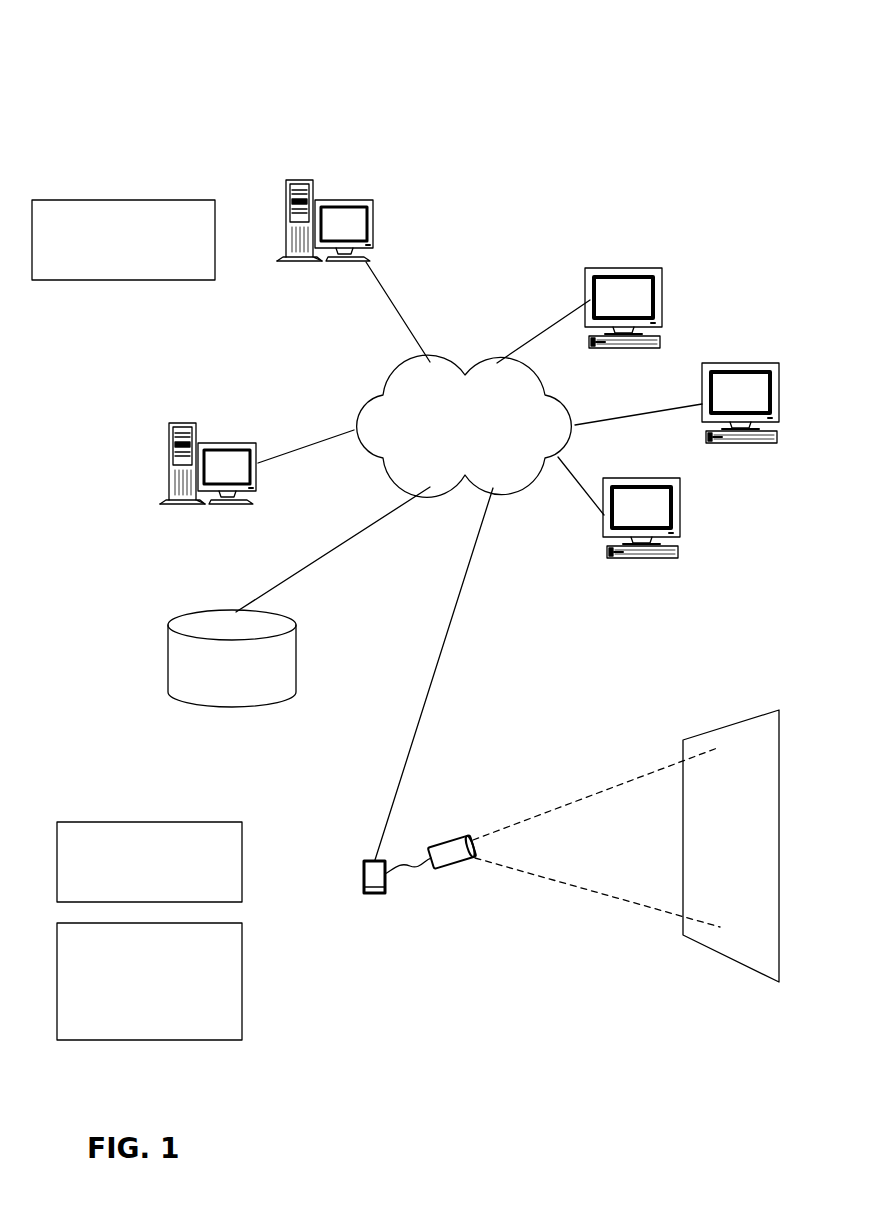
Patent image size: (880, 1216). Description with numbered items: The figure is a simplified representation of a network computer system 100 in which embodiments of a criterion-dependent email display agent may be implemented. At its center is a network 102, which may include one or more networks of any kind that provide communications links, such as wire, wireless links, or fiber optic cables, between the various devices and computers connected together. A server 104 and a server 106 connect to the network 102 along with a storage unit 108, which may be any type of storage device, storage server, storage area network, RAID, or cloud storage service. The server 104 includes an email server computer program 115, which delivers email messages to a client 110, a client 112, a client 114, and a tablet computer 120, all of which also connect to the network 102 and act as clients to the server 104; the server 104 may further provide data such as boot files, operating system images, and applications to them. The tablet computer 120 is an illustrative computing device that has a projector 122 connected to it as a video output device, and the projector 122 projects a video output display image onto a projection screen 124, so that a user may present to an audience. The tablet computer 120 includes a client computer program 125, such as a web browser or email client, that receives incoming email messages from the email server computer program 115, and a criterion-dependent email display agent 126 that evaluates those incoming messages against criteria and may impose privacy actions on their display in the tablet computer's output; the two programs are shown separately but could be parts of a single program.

The network computer system 100 is at (104, 82).
The network 102 is at (464, 426).
The server 104 is at (346, 200).
The server 106 is at (228, 445).
The storage unit 108 is at (232, 707).
The client 110 is at (623, 268).
The client 112 is at (742, 363).
The client 114 is at (683, 515).
The email server computer program 115 is at (215, 280).
The tablet computer 120 is at (365, 860).
The projector 122 is at (445, 865).
The projection screen 124 is at (700, 735).
The client computer program 125 is at (242, 822).
The criterion-dependent email display agent 126 is at (242, 1040).